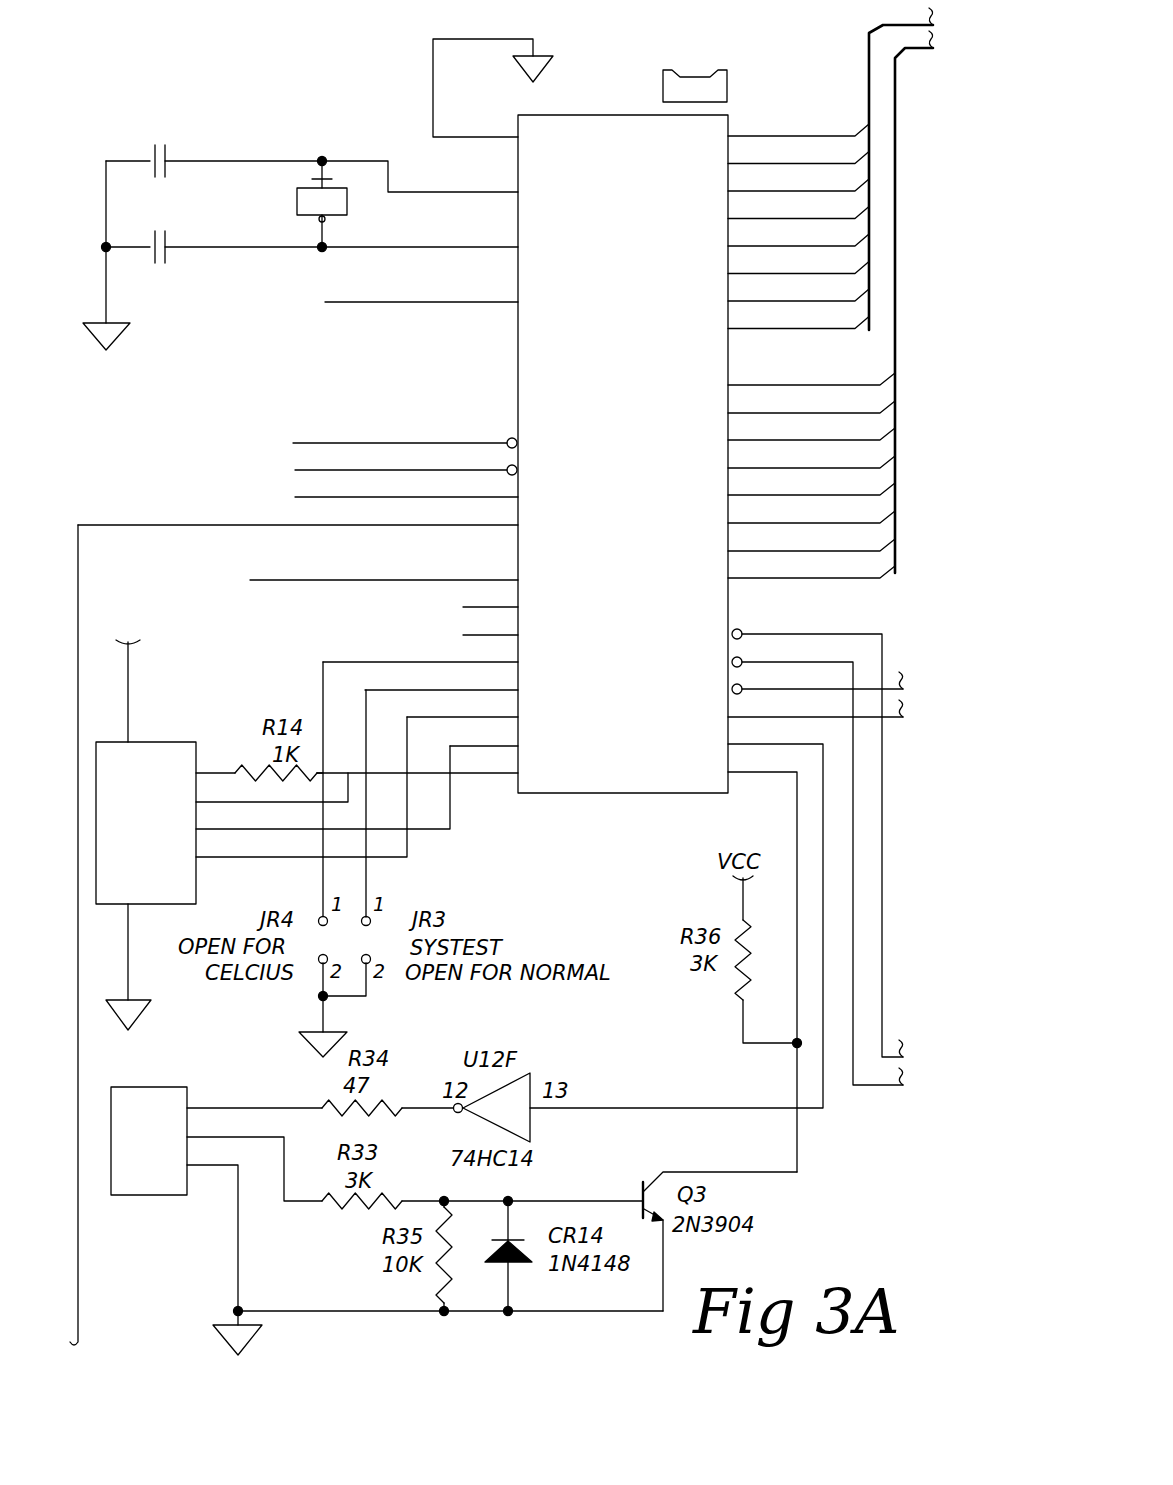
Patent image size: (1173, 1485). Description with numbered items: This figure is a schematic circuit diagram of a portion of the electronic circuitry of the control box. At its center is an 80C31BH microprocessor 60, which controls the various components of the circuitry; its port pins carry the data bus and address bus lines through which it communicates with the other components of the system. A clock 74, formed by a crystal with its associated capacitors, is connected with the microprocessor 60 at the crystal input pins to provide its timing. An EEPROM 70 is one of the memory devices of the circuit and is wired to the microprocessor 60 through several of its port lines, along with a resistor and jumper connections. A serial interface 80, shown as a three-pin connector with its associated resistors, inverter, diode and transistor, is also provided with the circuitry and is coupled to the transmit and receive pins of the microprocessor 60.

The clock 74 is at (296, 106).
The microprocessor 60 is at (612, 58).
The EEPROM 70 is at (196, 897).
The serial interface 80 is at (212, 1072).